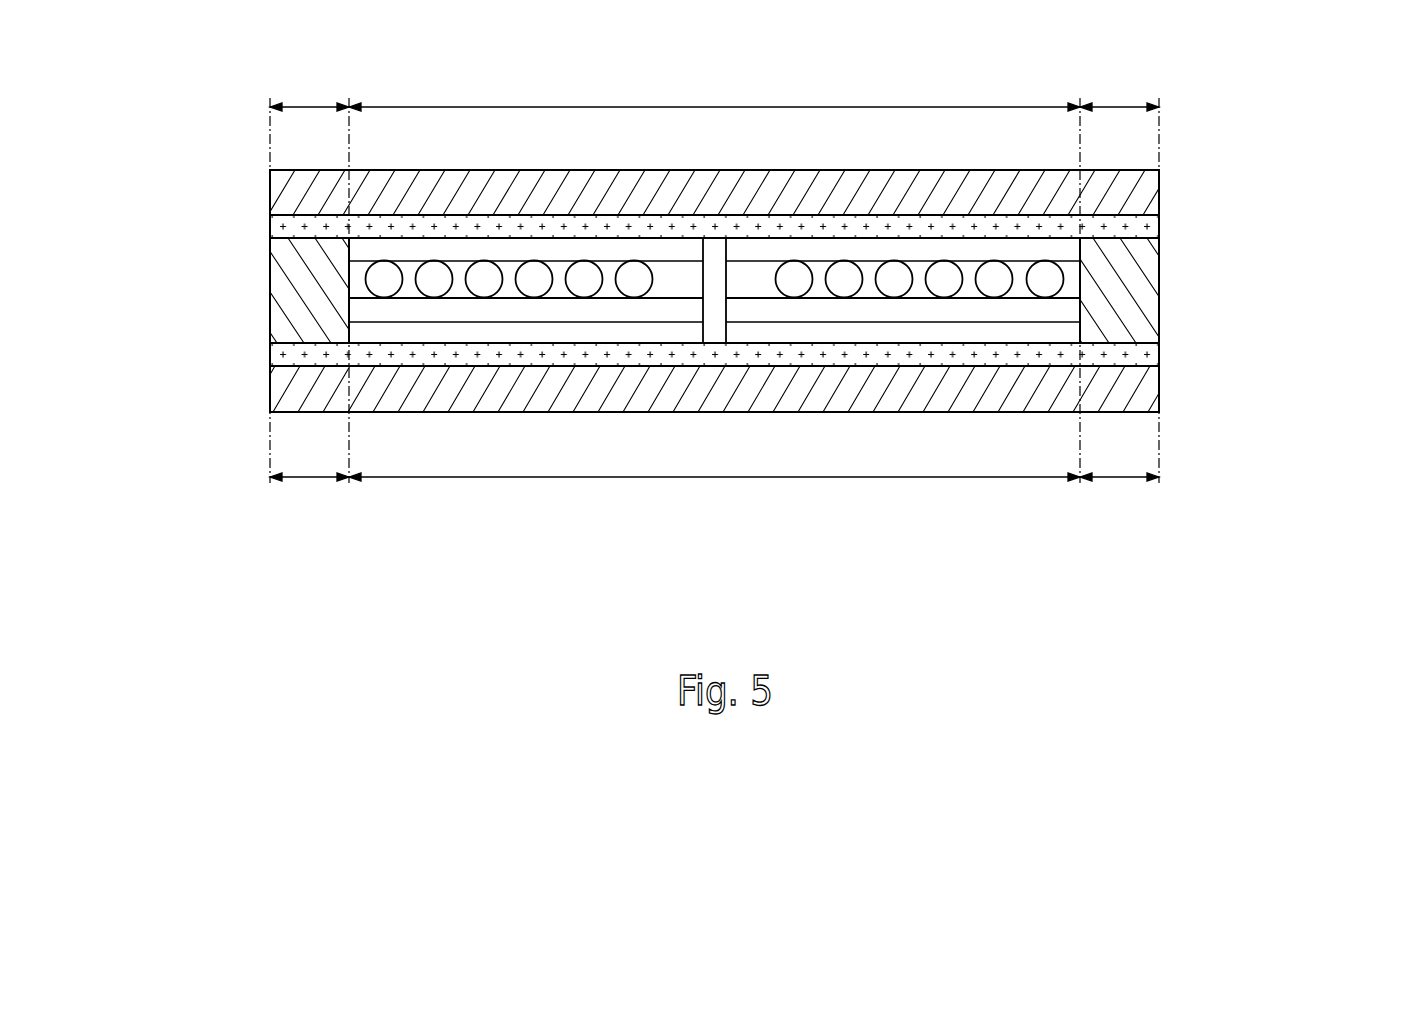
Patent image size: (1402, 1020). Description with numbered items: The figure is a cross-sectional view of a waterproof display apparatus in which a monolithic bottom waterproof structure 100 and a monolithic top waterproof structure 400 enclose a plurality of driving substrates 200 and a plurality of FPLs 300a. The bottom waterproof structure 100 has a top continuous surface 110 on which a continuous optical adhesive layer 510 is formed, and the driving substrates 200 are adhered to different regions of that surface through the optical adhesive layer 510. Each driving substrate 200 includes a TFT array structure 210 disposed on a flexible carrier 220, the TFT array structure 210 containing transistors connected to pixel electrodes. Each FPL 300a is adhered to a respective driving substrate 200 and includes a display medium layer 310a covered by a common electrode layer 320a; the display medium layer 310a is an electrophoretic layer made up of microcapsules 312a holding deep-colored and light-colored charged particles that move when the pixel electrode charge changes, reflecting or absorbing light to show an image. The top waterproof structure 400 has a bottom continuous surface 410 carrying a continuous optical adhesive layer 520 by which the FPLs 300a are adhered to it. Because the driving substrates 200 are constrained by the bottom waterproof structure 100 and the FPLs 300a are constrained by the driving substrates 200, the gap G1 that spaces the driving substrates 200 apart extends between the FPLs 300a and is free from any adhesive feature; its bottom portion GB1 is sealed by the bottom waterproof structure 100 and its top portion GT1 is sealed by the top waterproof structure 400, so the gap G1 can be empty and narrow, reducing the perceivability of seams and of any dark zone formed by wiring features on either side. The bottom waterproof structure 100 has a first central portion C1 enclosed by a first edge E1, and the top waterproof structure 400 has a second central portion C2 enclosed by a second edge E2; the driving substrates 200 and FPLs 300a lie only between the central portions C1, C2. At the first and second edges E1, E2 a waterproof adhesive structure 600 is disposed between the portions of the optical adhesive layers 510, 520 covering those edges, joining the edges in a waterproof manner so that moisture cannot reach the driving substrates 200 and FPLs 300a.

The bottom waterproof structure 100 is at (270, 393).
The top continuous surface 110 is at (272, 373).
The driving substrate 200 is at (714, 330).
The TFT array structure 210 is at (360, 308).
The carrier 220 is at (360, 332).
The FPL 300a is at (587, 163).
The display medium layer 310a is at (360, 270).
The microcapsule 312a is at (382, 275).
The common electrode layer 320a is at (360, 250).
The top waterproof structure 400 is at (1137, 185).
The bottom continuous surface 410 is at (1148, 212).
The optical adhesive layer 510 is at (1150, 354).
The optical adhesive layer 520 is at (1152, 230).
The waterproof adhesive structure 600 is at (290, 278).
The gap G1 is at (744, 327).
The top portion of the gap GT1 is at (715, 237).
The bottom portion of the gap GB1 is at (709, 344).
The first edge E1 is at (714, 493).
The second edge E2 is at (714, 90).
The first central portion C1 is at (714, 492).
The second central portion C2 is at (714, 90).